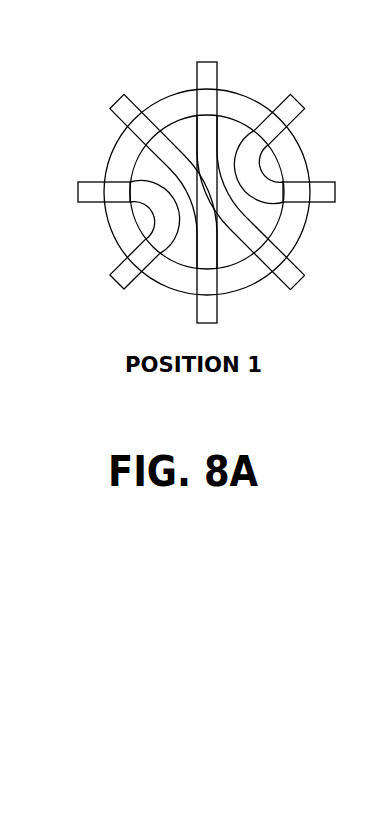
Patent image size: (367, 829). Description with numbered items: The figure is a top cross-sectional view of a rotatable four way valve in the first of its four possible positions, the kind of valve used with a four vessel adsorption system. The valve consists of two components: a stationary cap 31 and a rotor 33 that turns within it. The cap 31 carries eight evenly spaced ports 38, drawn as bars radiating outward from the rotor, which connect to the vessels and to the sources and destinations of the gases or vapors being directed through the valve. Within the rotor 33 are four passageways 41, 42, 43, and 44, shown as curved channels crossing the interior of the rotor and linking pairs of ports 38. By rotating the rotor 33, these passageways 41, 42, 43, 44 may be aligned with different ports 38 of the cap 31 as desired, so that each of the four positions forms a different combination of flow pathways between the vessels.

The cap 31 is at (236, 97).
The rotor 33 is at (261, 207).
The ports 38 is at (203, 312).
The passageway 41 is at (146, 187).
The passageway 42 is at (166, 147).
The passageway 43 is at (233, 223).
The passageway 44 is at (255, 169).